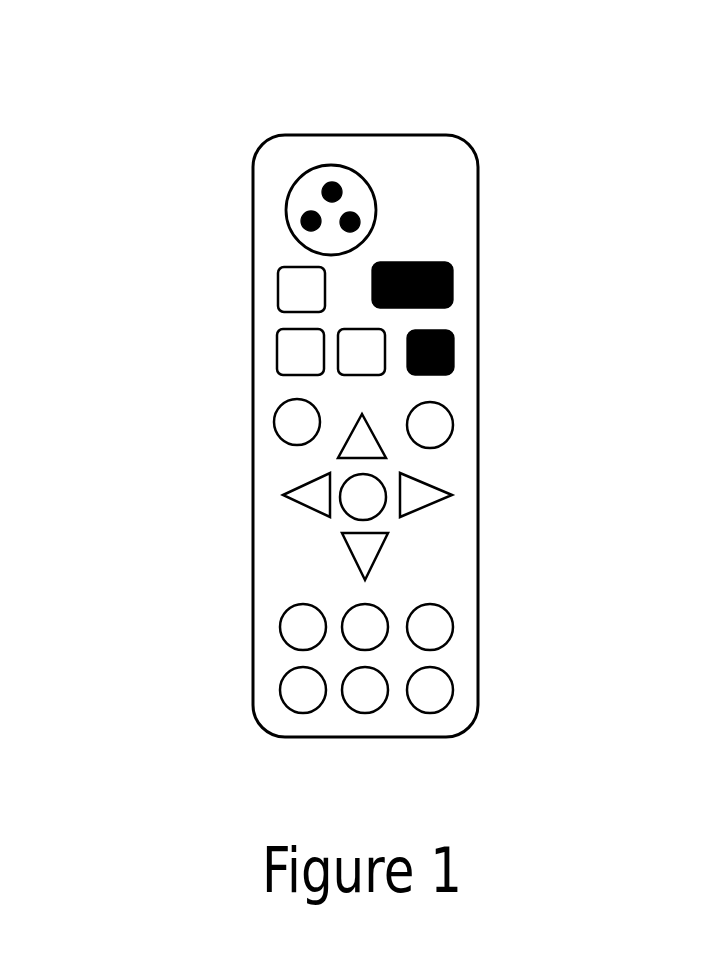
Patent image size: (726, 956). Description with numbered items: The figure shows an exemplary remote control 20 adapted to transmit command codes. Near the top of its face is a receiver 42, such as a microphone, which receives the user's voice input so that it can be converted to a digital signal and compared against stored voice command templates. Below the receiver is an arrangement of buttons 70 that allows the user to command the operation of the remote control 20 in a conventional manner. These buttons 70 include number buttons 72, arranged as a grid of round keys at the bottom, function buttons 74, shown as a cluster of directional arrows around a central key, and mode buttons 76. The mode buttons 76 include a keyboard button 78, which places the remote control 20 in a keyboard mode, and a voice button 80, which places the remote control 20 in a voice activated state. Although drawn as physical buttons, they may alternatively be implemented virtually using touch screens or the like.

The remote control 20 is at (482, 230).
The receiver 42 is at (340, 167).
The arrangement of buttons 70 is at (288, 533).
The number buttons 72 is at (447, 688).
The function buttons 74 is at (436, 492).
The mode buttons 76 is at (269, 365).
The keyboard button 78 is at (273, 283).
The voice button 80 is at (455, 278).